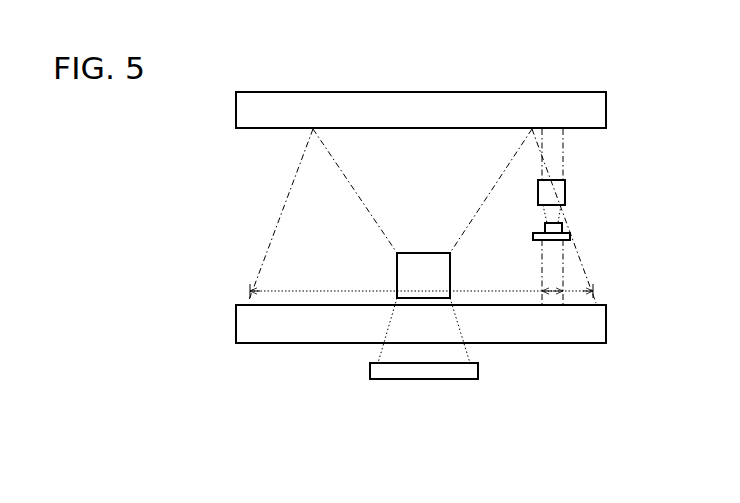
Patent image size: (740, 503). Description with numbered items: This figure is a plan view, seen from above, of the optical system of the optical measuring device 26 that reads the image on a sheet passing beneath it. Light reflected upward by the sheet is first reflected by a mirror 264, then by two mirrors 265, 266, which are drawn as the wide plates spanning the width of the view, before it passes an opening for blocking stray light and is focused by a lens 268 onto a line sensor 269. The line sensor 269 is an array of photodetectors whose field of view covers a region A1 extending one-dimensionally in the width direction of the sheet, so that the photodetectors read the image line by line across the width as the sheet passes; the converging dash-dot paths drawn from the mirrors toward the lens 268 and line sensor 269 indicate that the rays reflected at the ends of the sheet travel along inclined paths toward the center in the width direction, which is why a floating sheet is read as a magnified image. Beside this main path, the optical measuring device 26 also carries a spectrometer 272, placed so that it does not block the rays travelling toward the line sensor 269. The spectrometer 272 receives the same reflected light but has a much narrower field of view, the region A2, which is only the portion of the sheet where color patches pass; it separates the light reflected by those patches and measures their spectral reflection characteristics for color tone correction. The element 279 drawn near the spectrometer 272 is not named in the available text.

The optical measuring device 26 is at (538, 61).
The mirror 265 is at (566, 100).
The mirror 266 is at (421, 110).
The mirror 264 is at (580, 341).
The lens 268 is at (422, 258).
The line sensor 269 is at (425, 381).
The camera body 279 is at (566, 193).
The spectrometer 272 is at (563, 228).
The region A1 is at (304, 290).
The region A2 is at (540, 289).